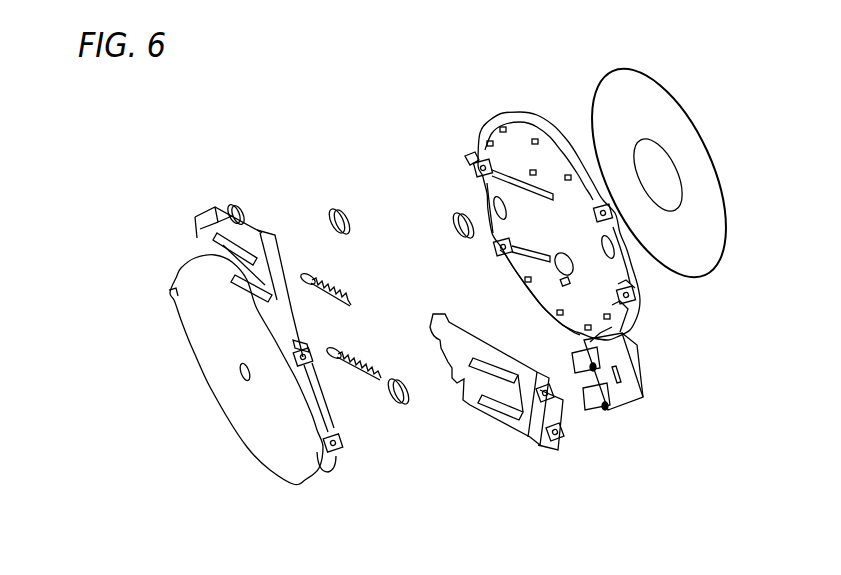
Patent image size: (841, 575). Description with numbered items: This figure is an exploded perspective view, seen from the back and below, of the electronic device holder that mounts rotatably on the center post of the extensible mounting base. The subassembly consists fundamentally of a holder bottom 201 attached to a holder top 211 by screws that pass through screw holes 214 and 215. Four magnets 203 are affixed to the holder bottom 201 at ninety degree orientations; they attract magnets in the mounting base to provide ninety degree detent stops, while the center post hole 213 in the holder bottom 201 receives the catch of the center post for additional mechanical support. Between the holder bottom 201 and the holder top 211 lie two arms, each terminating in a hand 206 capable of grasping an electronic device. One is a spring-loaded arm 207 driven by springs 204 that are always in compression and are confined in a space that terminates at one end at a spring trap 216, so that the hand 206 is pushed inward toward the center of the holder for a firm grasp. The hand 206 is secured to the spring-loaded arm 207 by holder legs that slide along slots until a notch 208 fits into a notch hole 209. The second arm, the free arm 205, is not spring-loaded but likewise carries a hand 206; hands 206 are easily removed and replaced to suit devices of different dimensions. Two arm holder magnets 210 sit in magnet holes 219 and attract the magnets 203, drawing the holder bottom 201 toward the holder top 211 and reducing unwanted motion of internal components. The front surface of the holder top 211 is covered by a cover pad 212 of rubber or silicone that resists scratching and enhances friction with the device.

The holder bottom 201 is at (253, 307).
The magnets 203 is at (340, 212).
The springs 204 is at (386, 385).
The free arm 205 is at (187, 220).
The hands 206 is at (227, 207).
The spring-loaded arm 207 is at (557, 460).
The notch 208 is at (567, 415).
The notch hole 209 is at (623, 388).
The arm holder magnets 210 is at (462, 210).
The holder top 211 is at (522, 115).
The cover pad 212 is at (663, 90).
The center post hole 213 is at (240, 370).
The screw holes 214 is at (341, 454).
The screw holes 215 is at (637, 296).
The spring trap 216 is at (447, 317).
The magnet holes 219 is at (487, 200).